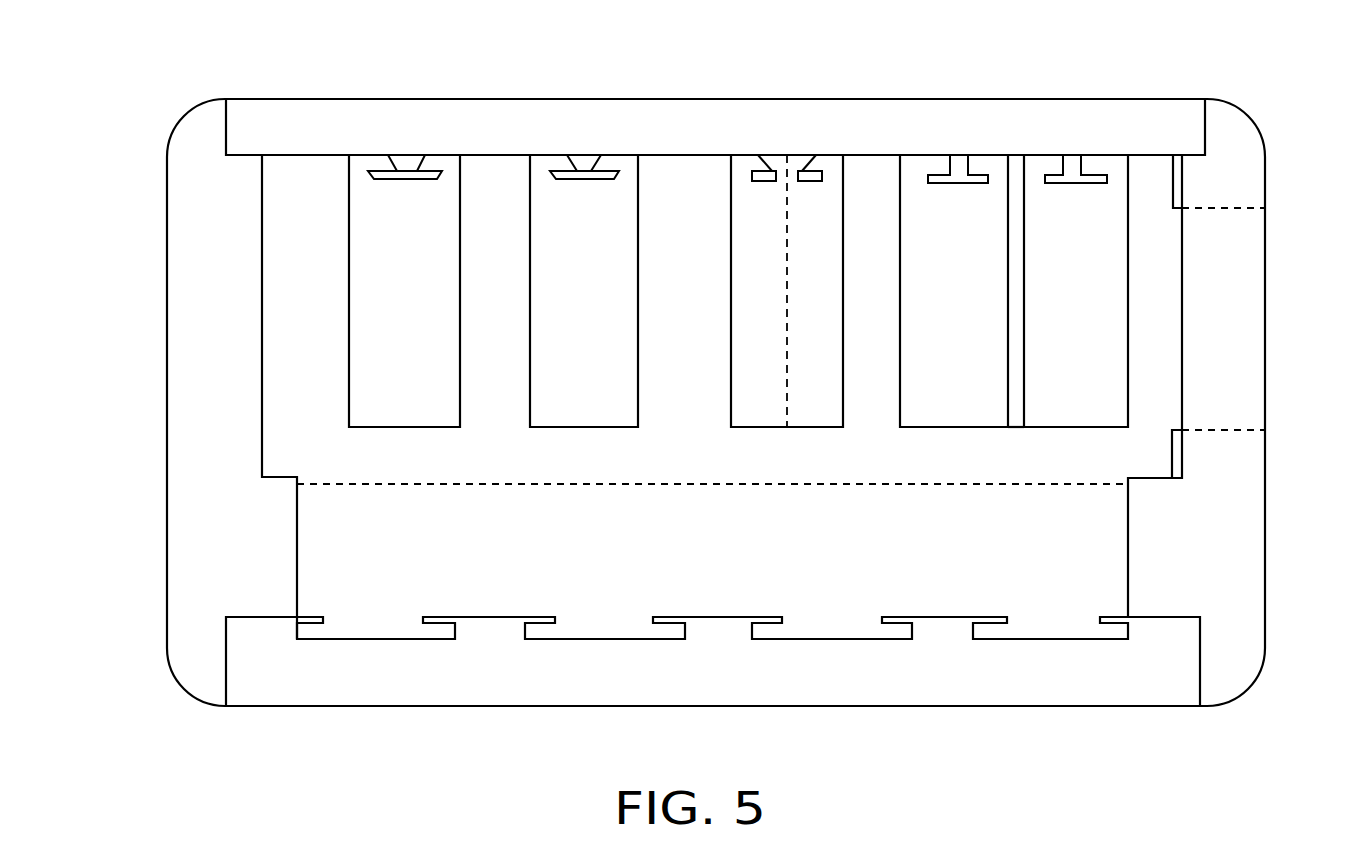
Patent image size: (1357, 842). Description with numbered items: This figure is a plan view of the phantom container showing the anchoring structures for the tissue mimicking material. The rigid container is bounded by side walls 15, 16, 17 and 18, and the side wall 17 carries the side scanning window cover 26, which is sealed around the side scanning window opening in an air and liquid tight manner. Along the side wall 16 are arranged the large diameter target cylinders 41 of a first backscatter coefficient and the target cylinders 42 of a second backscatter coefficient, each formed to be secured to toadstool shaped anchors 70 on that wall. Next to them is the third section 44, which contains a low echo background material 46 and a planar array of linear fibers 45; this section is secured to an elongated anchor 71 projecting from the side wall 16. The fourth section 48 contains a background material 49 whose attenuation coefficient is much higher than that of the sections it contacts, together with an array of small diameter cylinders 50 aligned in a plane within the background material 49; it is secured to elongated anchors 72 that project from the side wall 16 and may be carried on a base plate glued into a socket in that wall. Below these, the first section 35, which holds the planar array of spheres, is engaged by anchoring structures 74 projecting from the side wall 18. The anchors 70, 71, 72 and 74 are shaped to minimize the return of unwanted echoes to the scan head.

The side wall 15 is at (166, 440).
The side wall 16 is at (714, 99).
The side wall 17 is at (1244, 503).
The side wall 18 is at (1086, 690).
The side scanning window cover 26 is at (1183, 313).
The first section 35 is at (408, 565).
The target cylinders 41 is at (349, 261).
The target cylinders 42 is at (530, 268).
The third section 44 is at (731, 294).
The linear fibers 45 is at (784, 361).
The low echo background material 46 is at (822, 428).
The fourth section 48 is at (973, 432).
The background material 49 is at (1067, 428).
The small diameter cylinders 50 is at (1025, 331).
The toadstool shaped anchors 70 is at (430, 170).
The elongated anchor 71 is at (814, 162).
The elongated anchors 72 is at (978, 170).
The anchoring structures 74 is at (683, 613).